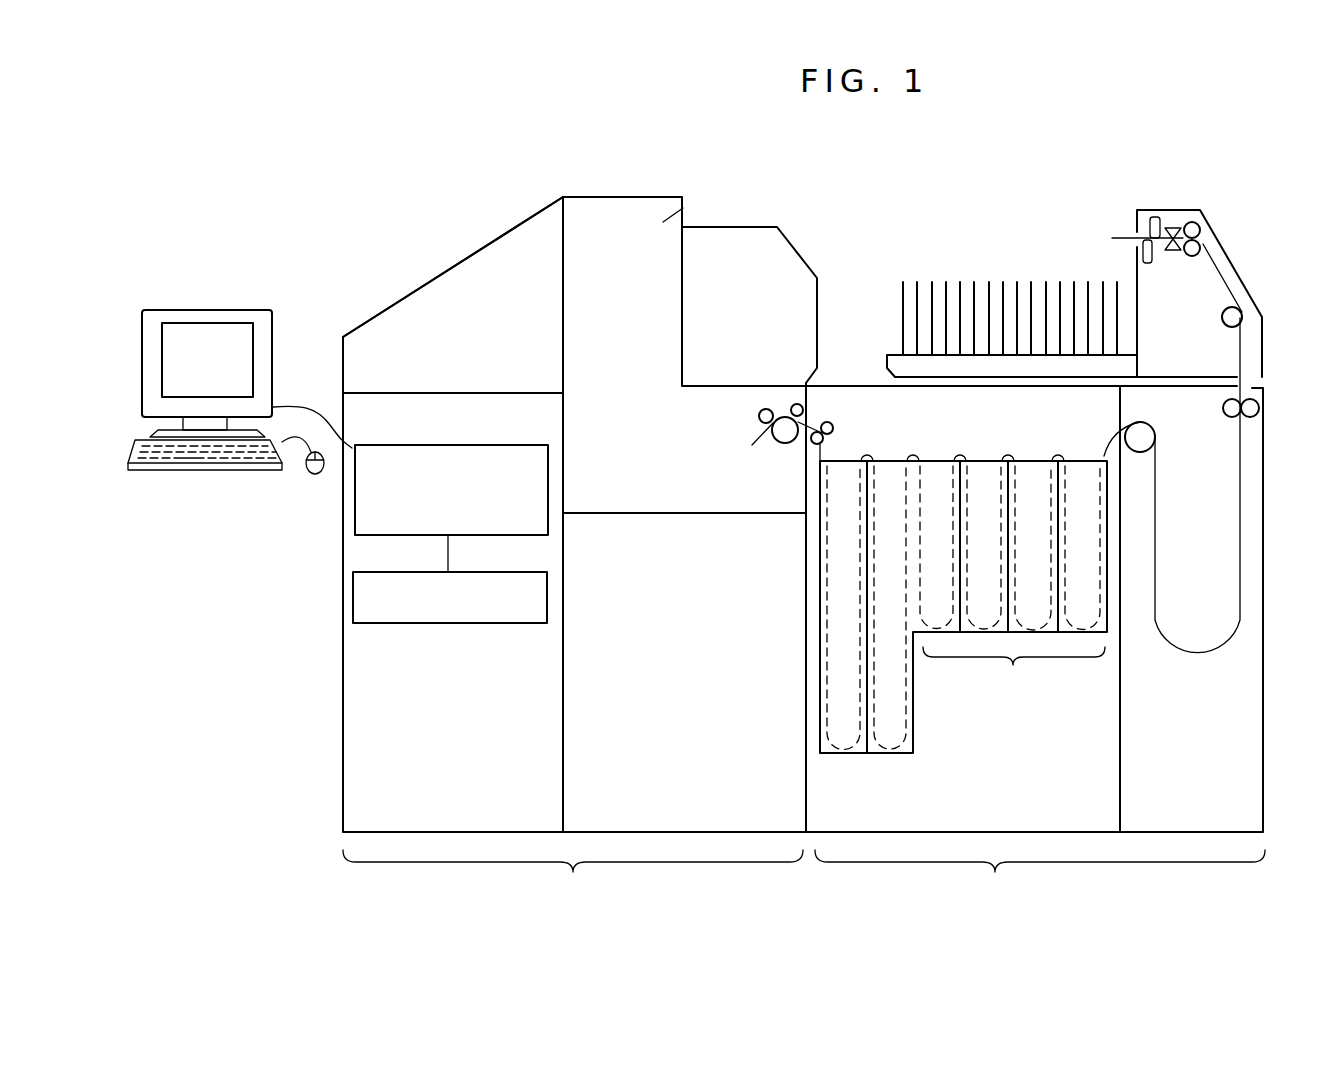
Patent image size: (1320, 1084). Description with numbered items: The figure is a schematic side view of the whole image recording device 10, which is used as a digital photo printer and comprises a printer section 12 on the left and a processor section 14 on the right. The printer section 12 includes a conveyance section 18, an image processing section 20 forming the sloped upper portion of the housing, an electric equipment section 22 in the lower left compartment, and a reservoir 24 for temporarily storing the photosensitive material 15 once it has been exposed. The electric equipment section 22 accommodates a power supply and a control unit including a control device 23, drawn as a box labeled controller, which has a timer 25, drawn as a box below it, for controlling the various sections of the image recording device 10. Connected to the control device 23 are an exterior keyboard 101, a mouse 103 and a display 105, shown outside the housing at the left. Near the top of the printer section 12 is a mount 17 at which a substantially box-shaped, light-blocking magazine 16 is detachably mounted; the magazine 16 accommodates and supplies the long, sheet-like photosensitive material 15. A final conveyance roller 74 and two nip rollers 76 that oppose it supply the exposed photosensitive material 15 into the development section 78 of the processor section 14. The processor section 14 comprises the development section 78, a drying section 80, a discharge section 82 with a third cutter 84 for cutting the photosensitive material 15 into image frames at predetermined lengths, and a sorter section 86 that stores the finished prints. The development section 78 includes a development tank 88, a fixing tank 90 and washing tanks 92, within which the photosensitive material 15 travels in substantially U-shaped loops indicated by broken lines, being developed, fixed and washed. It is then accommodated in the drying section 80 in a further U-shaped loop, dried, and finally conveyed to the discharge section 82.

The image recording device 10 is at (843, 225).
The printer section 12 is at (573, 881).
The processor section 14 is at (1040, 888).
The photosensitive material 15 is at (1152, 618).
The magazine 16 is at (767, 240).
The mount 17 is at (683, 212).
The conveyance section 18 is at (663, 224).
The image processing section 20 is at (438, 295).
The electric equipment section 22 is at (343, 615).
The control device 23 is at (480, 445).
The reservoir 24 is at (681, 808).
The timer 25 is at (466, 625).
The final conveyance roller 74 is at (780, 445).
The nip rollers 76 is at (797, 404).
The development section 78 is at (968, 808).
The drying section 80 is at (1190, 798).
The discharge section 82 is at (1100, 238).
The third cutter 84 is at (1160, 210).
The sorter section 86 is at (1022, 270).
The development tank 88 is at (850, 755).
The fixing tank 90 is at (904, 755).
The washing tanks 92 is at (1012, 583).
The exterior keyboard 101 is at (170, 470).
The mouse 103 is at (302, 465).
The display 105 is at (207, 323).